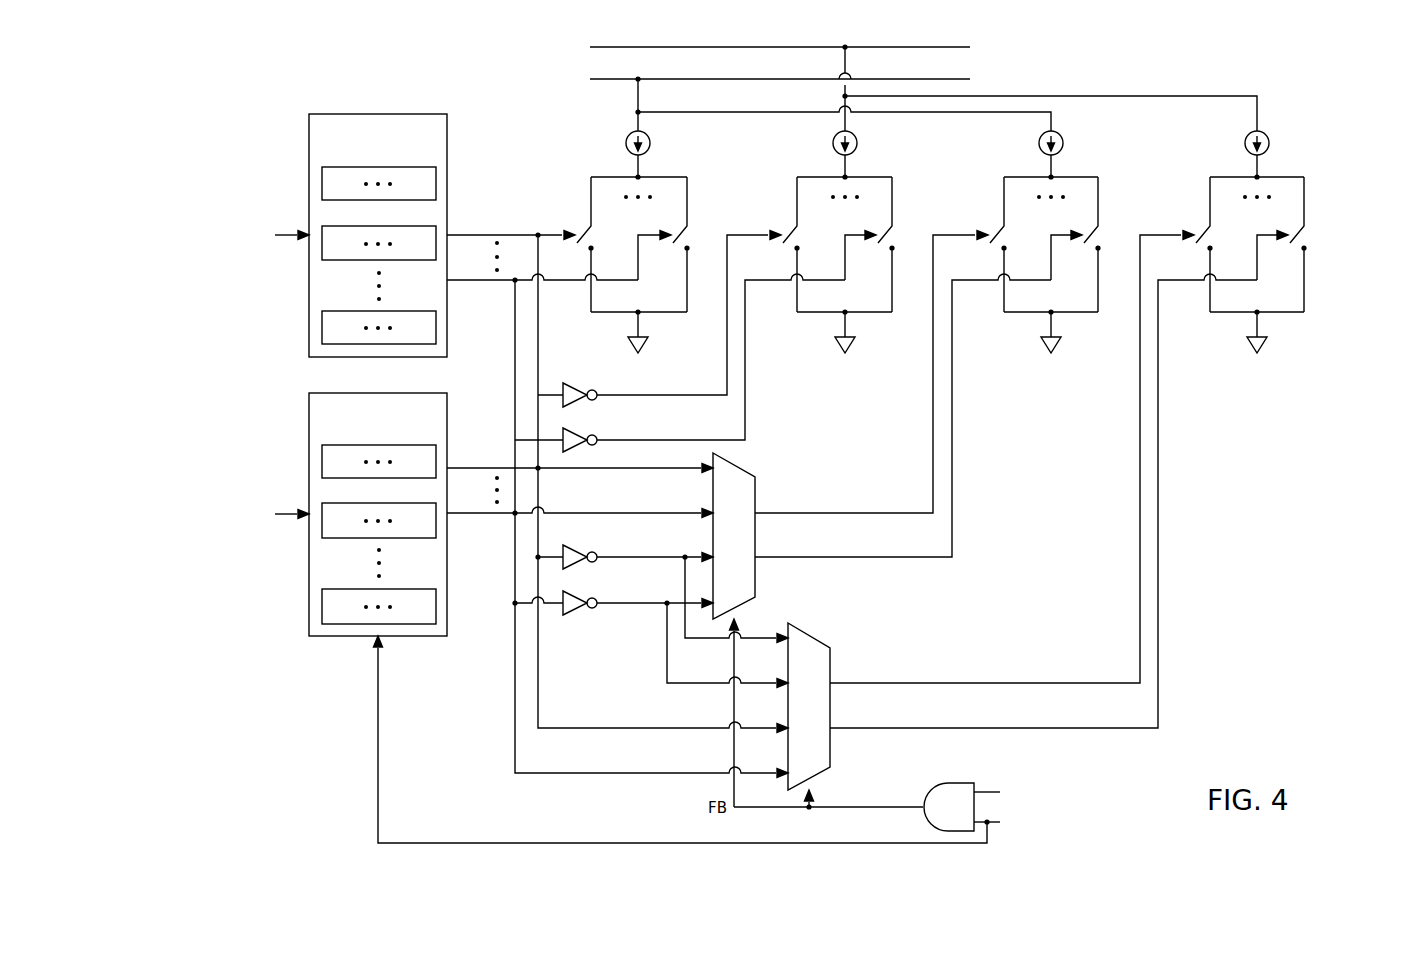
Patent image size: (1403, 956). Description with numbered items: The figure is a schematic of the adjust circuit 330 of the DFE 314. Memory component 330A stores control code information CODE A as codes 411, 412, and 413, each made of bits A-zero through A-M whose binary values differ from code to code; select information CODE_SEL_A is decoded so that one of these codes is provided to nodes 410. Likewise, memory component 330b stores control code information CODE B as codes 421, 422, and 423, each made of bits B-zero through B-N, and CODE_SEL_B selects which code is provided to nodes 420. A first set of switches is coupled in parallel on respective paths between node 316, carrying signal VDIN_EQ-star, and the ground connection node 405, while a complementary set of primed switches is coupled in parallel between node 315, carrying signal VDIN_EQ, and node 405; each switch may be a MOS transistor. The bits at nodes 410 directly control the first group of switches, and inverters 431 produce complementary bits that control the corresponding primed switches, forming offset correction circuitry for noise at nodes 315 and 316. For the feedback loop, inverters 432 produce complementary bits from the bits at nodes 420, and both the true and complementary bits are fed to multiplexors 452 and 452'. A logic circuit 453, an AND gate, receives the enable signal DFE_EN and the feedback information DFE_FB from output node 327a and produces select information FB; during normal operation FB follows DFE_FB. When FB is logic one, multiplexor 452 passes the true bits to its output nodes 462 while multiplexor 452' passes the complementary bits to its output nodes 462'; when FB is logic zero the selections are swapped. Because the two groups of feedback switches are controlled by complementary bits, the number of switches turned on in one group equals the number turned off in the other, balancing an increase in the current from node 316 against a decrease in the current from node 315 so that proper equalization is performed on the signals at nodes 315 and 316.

The DFE 314 is at (251, 75).
The adjust circuit 330 is at (1200, 70).
The memory component 330A is at (378, 113).
The memory component 330b is at (378, 392).
The code 411 is at (364, 167).
The code 412 is at (364, 226).
The code 413 is at (364, 311).
The code 421 is at (364, 445).
The code 422 is at (364, 503).
The code 423 is at (364, 589).
The nodes 410 is at (491, 233).
The nodes 420 is at (491, 466).
The node 315 is at (763, 47).
The node 316 is at (763, 79).
The node 405 is at (643, 346).
The inverters 431 is at (578, 385).
The inverters 432 is at (578, 547).
The multiplexor 452 is at (750, 626).
The multiplexor 452' is at (830, 711).
The nodes 462 is at (903, 394).
The nodes 462' is at (1043, 480).
The logic circuit 453 is at (981, 792).
The output node 327a is at (985, 791).